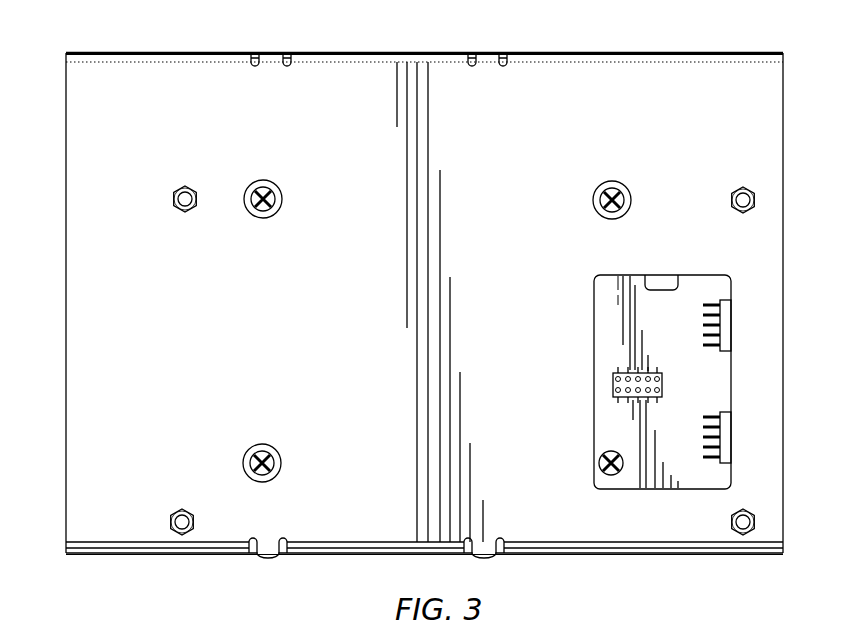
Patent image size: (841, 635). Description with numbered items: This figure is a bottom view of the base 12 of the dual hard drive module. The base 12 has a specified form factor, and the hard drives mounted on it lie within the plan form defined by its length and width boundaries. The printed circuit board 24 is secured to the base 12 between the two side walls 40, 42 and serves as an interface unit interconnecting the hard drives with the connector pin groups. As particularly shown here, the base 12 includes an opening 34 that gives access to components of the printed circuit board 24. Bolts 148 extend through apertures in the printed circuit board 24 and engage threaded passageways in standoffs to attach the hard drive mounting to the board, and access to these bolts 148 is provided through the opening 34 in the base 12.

The base 12 is at (96, 390).
The printed circuit board 24 is at (617, 311).
The opening 34 is at (600, 350).
The side wall 40 is at (211, 58).
The side wall 42 is at (196, 556).
The bolt 148 is at (264, 219).